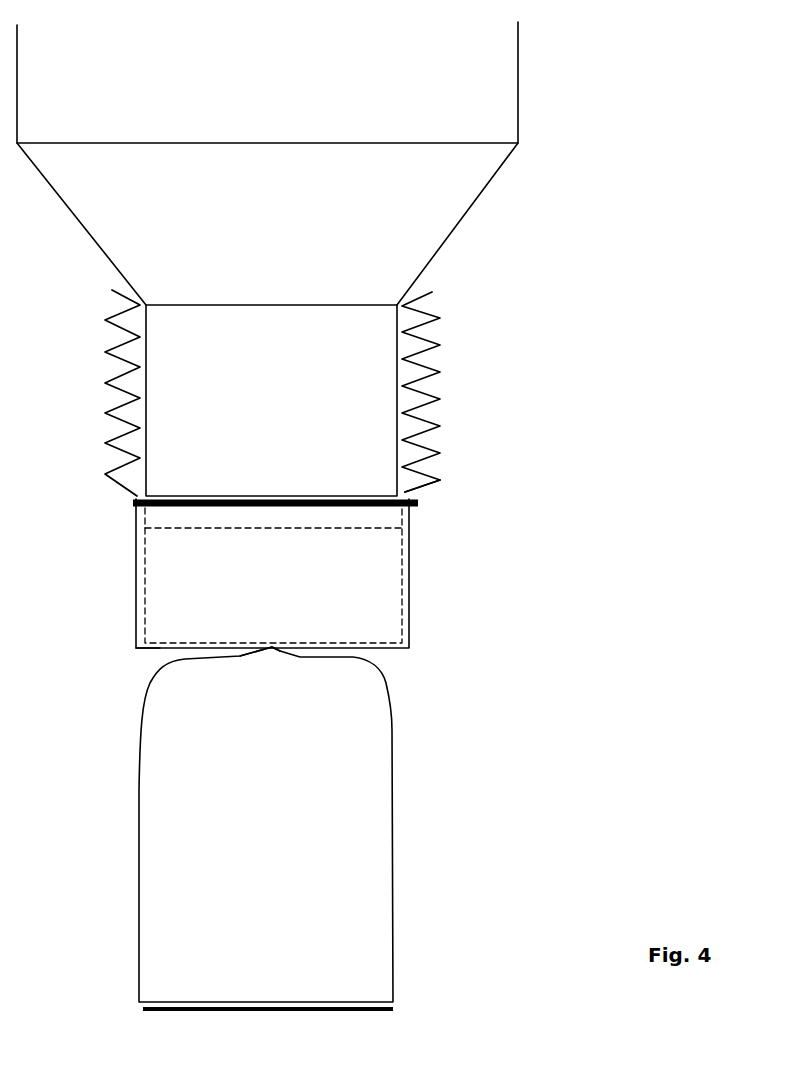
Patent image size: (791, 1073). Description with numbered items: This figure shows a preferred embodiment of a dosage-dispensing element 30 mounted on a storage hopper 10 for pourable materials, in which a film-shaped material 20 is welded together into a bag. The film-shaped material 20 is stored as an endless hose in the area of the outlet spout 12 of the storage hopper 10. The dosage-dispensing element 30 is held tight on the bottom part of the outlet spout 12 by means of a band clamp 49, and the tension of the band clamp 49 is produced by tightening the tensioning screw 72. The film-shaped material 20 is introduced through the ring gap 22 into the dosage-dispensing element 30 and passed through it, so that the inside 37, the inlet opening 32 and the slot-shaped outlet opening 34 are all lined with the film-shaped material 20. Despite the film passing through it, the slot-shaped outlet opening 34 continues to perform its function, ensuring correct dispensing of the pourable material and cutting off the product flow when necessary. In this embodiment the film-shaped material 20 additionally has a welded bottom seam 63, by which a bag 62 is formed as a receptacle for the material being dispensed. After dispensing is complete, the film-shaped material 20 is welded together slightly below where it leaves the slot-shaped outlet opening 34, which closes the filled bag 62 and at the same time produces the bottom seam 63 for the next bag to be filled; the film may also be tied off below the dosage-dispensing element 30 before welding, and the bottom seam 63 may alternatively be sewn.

The storage hopper 10 is at (517, 124).
The outlet spout 12 is at (145, 403).
The film-shaped material 20 is at (440, 368).
The ring gap 22 is at (407, 490).
The dosage-dispensing element 30 is at (136, 567).
The inlet opening 32 is at (290, 497).
The slot-shaped outlet opening 34 is at (273, 648).
The inside 37 is at (143, 648).
The band clamp 49 is at (135, 500).
The bag 62 is at (393, 822).
The bottom seam 63 is at (140, 1007).
The tensioning screw 72 is at (418, 503).